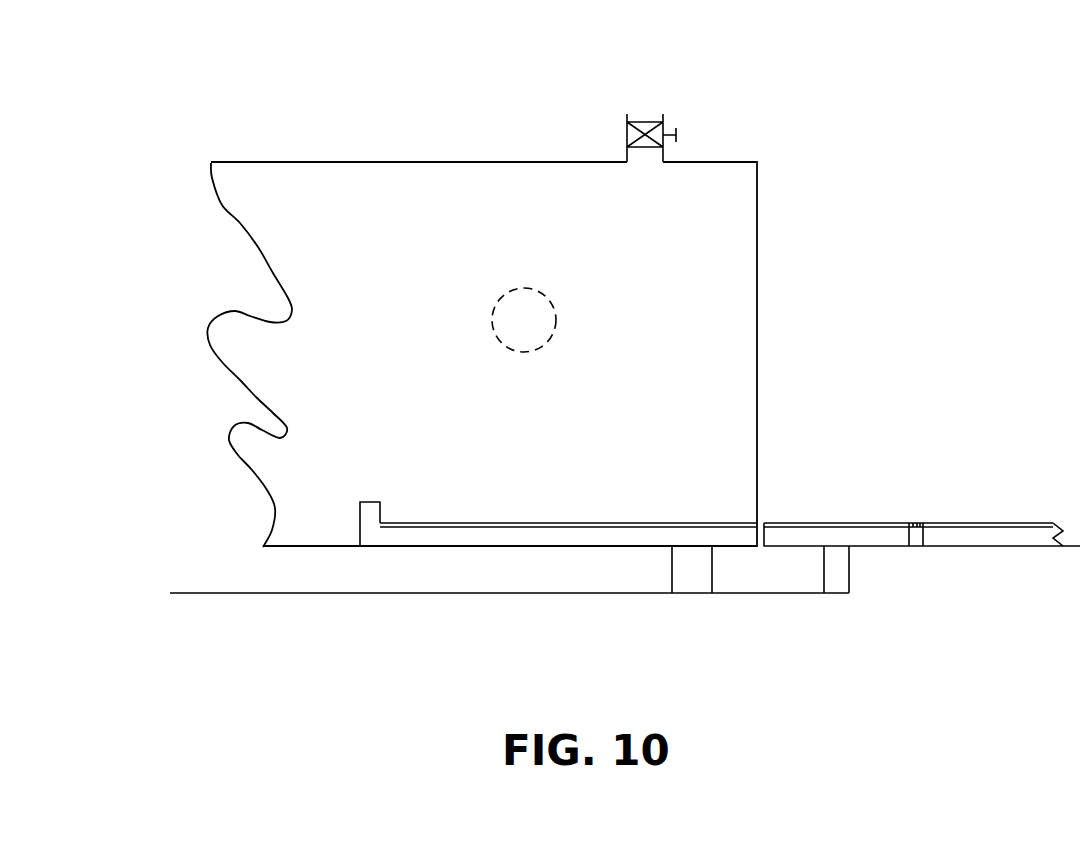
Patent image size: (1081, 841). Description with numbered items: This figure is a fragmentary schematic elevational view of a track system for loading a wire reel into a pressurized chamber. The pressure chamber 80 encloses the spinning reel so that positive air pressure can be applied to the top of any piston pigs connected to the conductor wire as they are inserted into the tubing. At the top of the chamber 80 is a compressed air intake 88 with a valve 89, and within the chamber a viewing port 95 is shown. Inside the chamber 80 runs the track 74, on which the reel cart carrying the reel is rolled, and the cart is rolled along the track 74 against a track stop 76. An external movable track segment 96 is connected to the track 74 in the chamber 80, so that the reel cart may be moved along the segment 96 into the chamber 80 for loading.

The pressure chamber 80 is at (342, 162).
The compressed air intake 88 is at (643, 100).
The valve 89 is at (698, 133).
The viewing port 95 is at (560, 300).
The stop 76 is at (375, 488).
The tracks 74 is at (470, 542).
The external movable track segment 96 is at (1025, 500).